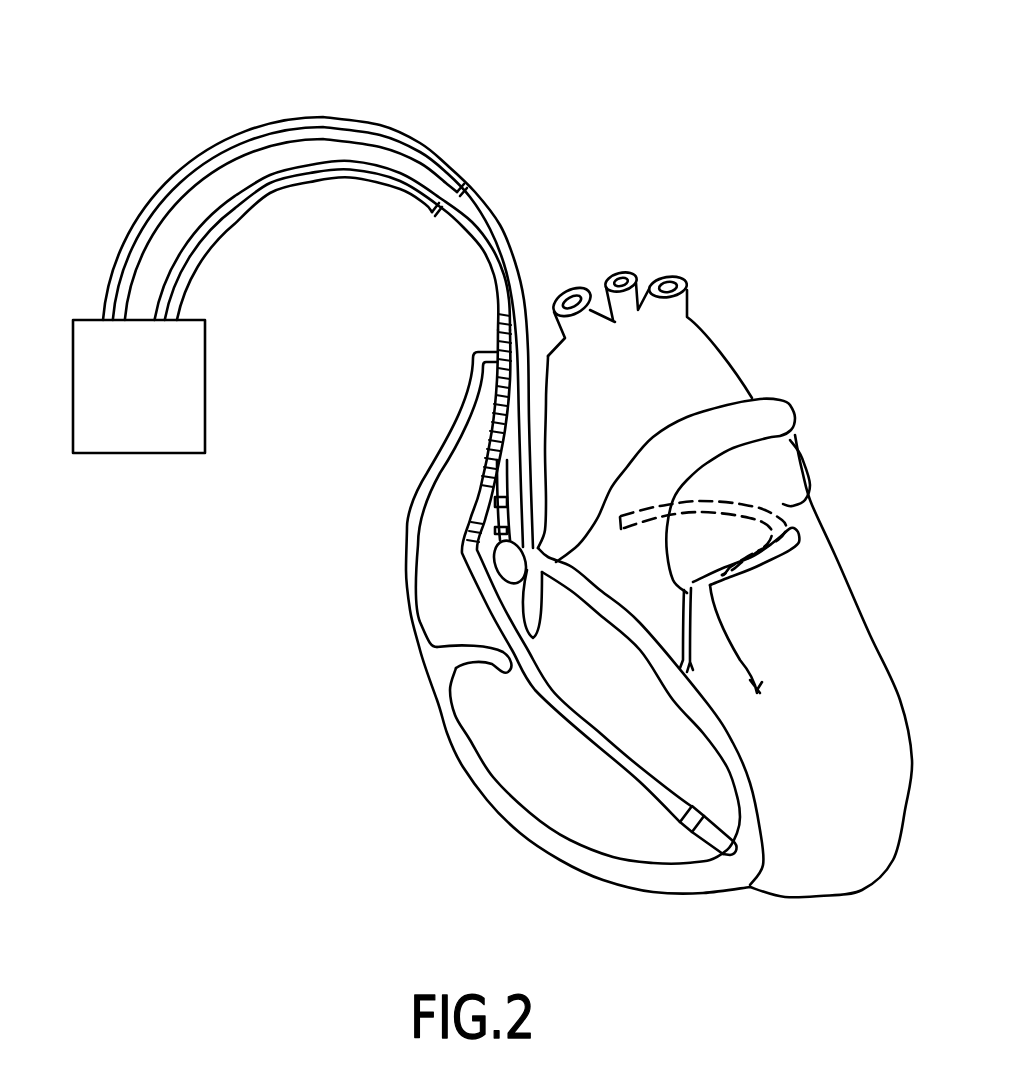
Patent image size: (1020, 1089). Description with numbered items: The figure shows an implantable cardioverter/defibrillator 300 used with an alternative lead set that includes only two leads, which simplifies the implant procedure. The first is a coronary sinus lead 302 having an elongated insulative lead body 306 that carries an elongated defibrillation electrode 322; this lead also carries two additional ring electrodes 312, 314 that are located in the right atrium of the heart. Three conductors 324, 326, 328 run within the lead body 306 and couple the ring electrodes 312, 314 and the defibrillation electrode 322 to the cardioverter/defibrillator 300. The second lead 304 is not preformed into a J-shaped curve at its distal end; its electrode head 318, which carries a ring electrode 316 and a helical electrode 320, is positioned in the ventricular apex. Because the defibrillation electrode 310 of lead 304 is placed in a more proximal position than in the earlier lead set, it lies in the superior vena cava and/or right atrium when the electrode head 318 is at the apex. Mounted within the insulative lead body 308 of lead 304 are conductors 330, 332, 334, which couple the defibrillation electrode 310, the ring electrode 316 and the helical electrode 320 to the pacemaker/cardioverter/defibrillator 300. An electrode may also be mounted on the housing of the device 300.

The cardioverter/defibrillator 300 is at (130, 435).
The coronary sinus lead 302 is at (491, 296).
The lead 304 is at (463, 569).
The elongated insulative lead body 306 is at (348, 282).
The insulative lead body 308 is at (333, 245).
The defibrillation electrode 310 is at (487, 440).
The ring electrode 312 is at (497, 497).
The ring electrode 314 is at (483, 530).
The ring electrode 316 is at (686, 832).
The electrode head 318 is at (705, 842).
The helical electrode 320 is at (745, 855).
The elongated defibrillation electrode 322 is at (806, 500).
The conductor 324 is at (307, 117).
The conductor 326 is at (353, 130).
The conductor 328 is at (260, 150).
The conductor 330 is at (370, 180).
The conductor 332 is at (297, 182).
The conductor 334 is at (270, 182).